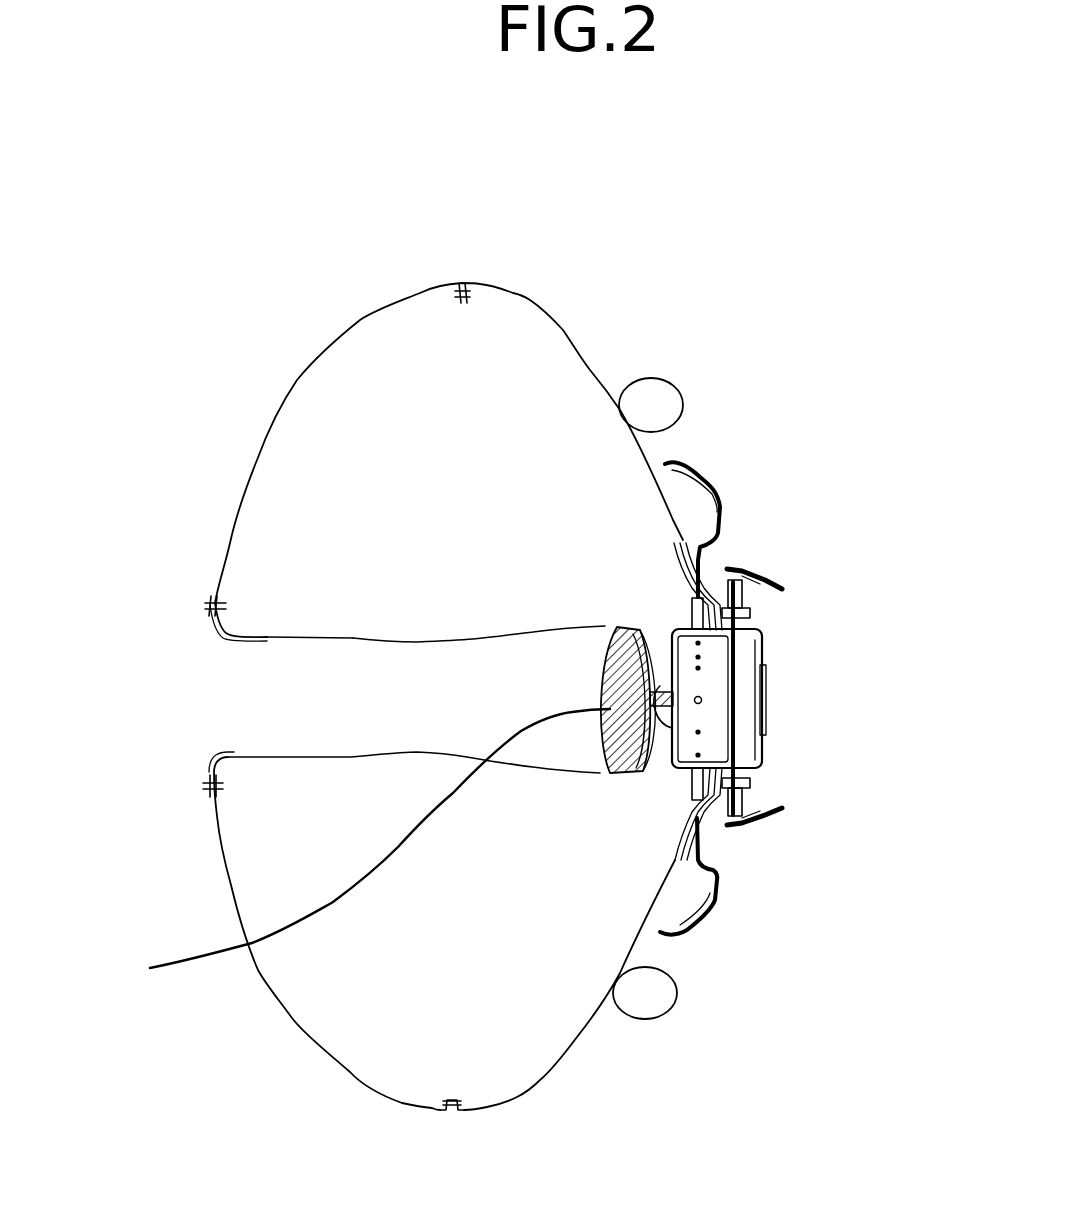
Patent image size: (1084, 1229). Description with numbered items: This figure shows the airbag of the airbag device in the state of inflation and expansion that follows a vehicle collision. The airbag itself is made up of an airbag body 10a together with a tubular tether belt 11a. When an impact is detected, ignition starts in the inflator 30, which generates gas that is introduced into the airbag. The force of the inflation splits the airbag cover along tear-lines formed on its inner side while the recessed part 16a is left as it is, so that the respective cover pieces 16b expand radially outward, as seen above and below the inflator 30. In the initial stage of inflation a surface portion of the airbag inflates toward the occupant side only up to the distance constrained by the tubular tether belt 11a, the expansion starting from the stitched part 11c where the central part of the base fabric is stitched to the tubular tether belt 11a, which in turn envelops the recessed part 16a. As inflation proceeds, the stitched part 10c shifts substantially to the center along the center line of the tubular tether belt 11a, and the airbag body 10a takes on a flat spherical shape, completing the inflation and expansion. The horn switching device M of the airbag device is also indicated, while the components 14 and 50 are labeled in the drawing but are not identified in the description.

The airbag body 10a is at (300, 378).
The stitched part 10c is at (462, 296).
The stitched part 11c is at (215, 603).
The tubular tether belt 11a is at (385, 640).
The mounting hook 14 is at (717, 567).
The recessed part 16a is at (677, 750).
The cover pieces 16b is at (710, 477).
The inflator 30 is at (763, 702).
The tube member 50 is at (681, 393).
The horn switching device M is at (363, 852).